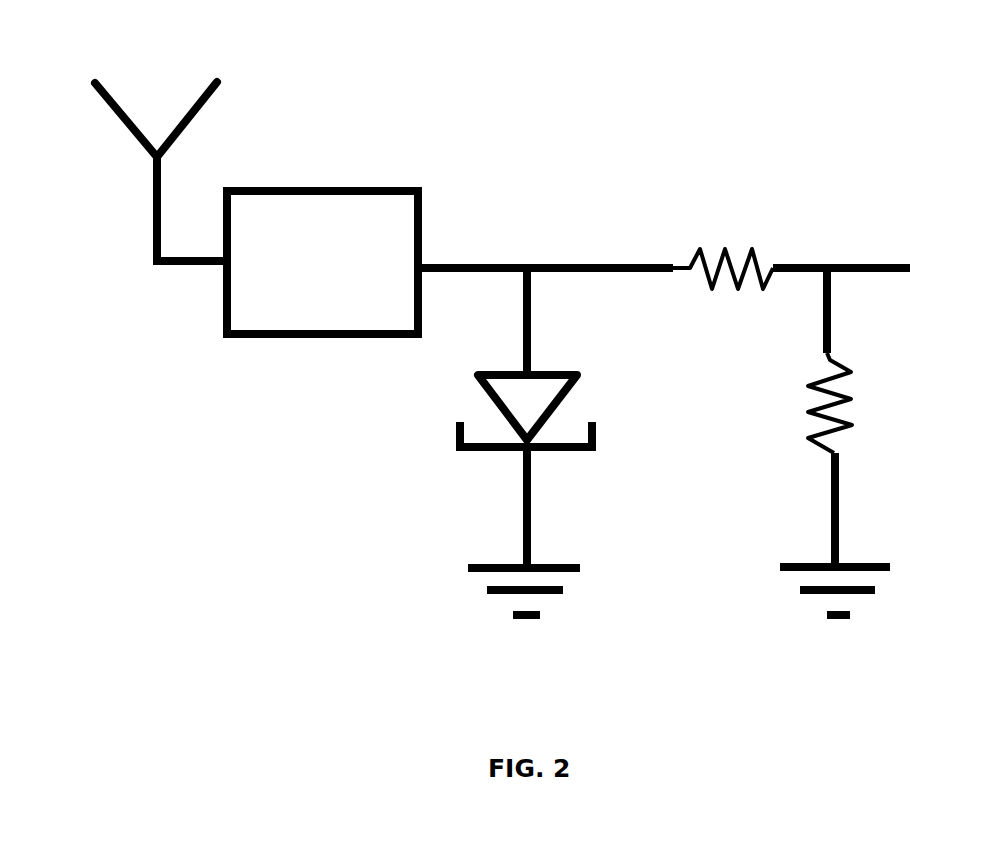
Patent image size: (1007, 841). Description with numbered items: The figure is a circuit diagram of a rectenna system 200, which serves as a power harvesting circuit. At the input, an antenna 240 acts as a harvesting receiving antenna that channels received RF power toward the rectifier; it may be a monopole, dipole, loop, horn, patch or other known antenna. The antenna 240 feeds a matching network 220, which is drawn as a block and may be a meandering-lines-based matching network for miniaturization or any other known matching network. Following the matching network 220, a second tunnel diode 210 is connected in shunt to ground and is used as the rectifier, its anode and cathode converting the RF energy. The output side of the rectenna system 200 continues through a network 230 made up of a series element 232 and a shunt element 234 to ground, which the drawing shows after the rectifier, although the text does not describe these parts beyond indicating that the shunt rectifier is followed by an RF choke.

The rectenna system 200 is at (412, 56).
The second tunnel diode 210 is at (482, 384).
The matching network 220 is at (222, 313).
The resistor divider network 230 is at (811, 378).
The first resistor 232 is at (750, 249).
The second resistor 234 is at (850, 397).
The antenna 240 is at (121, 118).